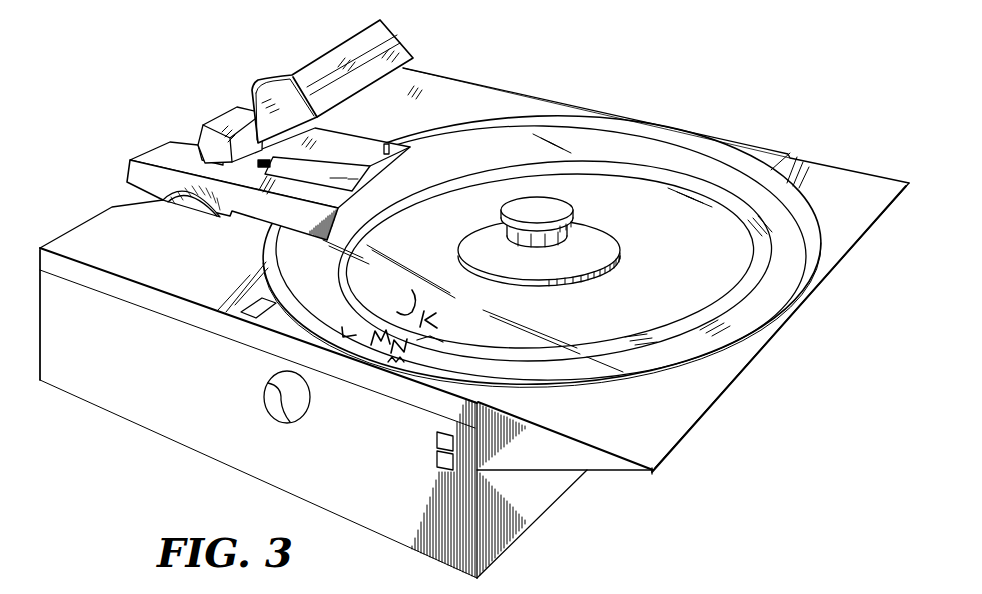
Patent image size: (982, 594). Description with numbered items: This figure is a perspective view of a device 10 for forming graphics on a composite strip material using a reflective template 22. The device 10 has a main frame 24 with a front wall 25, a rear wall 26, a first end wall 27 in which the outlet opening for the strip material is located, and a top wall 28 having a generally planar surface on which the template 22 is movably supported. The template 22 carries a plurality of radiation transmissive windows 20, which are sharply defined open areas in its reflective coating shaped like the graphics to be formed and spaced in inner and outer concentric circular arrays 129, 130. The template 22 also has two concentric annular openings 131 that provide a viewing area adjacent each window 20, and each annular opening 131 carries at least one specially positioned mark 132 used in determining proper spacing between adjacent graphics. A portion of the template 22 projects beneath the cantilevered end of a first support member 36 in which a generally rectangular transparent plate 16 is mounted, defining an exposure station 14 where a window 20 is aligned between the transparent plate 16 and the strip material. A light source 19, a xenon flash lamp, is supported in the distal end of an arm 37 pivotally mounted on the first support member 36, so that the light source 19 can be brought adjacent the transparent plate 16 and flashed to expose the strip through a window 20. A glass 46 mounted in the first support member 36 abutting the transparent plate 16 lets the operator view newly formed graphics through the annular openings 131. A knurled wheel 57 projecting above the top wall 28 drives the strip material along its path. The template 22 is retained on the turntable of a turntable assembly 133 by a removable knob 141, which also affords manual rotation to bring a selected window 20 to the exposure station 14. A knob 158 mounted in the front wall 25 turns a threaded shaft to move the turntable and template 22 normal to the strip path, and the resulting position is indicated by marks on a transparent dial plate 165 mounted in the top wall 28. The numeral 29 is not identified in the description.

The device for forming graphics 10 is at (506, 80).
The exposure station 14 is at (356, 169).
The transparent plate 16 is at (340, 177).
The light source 19 is at (408, 60).
The radiation transmissive windows 20 is at (390, 307).
The template 22 is at (814, 195).
The main frame 24 is at (403, 553).
The front wall 25 is at (363, 517).
The rear wall 26 is at (650, 123).
The first end wall 27 is at (42, 373).
The top wall 28 is at (216, 282).
The pin 29 is at (390, 142).
The first support member 36 is at (415, 163).
The arm 37 is at (236, 140).
The glass 46 is at (290, 168).
The knurled wheel 57 is at (185, 205).
The inner circular array 129 is at (447, 305).
The outer circular array 130 is at (421, 355).
The annular openings 131 is at (367, 353).
The mark 132 is at (390, 398).
The turntable assembly 133 is at (601, 224).
The knob 141 is at (543, 197).
The knob 158 is at (291, 422).
The dial plate 165 is at (248, 318).